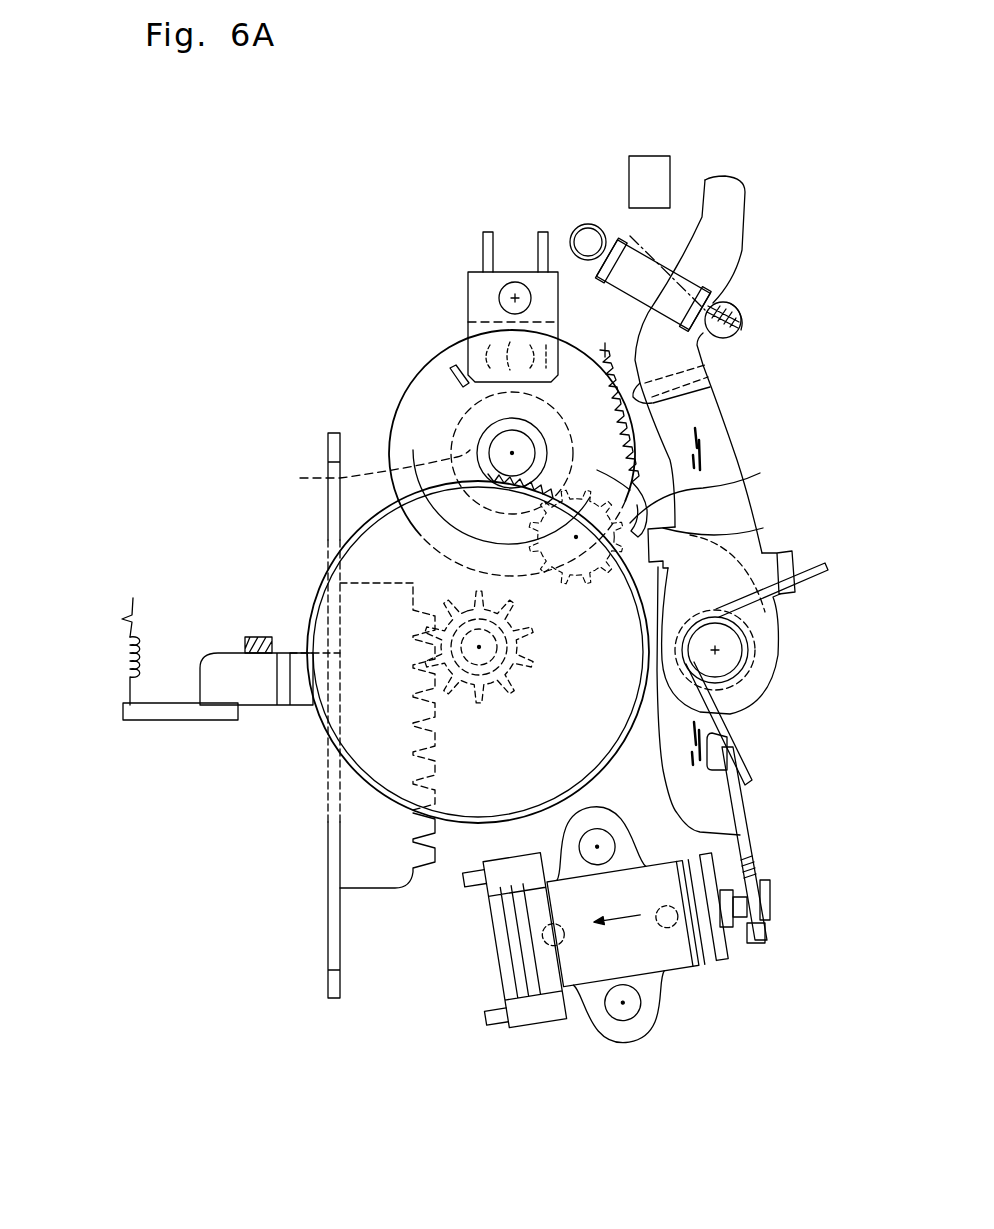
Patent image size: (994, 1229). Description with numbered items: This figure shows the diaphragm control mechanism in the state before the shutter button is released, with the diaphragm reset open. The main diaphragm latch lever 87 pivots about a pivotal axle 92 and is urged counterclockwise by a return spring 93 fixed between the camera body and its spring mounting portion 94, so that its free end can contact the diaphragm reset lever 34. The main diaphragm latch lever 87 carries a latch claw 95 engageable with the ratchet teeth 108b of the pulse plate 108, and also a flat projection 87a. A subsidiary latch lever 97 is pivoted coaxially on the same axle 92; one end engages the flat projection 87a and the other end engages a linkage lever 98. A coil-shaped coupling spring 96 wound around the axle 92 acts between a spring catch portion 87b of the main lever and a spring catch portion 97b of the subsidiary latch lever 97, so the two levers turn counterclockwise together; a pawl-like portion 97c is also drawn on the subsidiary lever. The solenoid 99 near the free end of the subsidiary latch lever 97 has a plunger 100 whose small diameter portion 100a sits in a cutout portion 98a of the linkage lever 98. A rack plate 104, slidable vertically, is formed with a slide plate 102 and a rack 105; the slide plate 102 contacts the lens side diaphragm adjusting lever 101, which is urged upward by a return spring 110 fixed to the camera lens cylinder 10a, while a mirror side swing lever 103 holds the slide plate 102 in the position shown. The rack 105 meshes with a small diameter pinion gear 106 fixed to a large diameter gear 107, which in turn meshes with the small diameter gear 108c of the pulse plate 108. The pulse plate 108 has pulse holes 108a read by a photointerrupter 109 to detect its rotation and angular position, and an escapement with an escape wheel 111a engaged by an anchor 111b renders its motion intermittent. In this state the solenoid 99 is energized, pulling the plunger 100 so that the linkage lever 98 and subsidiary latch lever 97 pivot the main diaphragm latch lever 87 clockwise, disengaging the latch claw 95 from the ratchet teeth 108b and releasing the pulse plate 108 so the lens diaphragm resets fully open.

The camera lens cylinder 10a is at (133, 598).
The diaphragm reset lever 34 is at (648, 162).
The main diaphragm latch lever 87 is at (735, 230).
The flat projection 87a is at (760, 527).
The spring catch portion 87b is at (790, 562).
The pivotal axle 92 is at (740, 655).
The return spring 93 is at (636, 250).
The spring mounting portion 94 is at (742, 328).
The latch claw 95 is at (710, 388).
The coil-shaped coupling spring 96 is at (817, 573).
The subsidiary latch lever 97 is at (673, 775).
The spring catch portion 97b is at (730, 753).
The pawl 97c is at (630, 583).
The linkage lever 98 is at (750, 842).
The cutout portion 98a is at (768, 930).
The solenoid 99 is at (713, 957).
The plunger 100 is at (772, 890).
The small diameter portion 100a is at (745, 925).
The lens side diaphragm adjusting lever 101 is at (175, 718).
The slide plate 102 is at (222, 665).
The mirror side swing lever 103 is at (258, 637).
The rack plate 104 is at (330, 808).
The rack 105 is at (427, 857).
The small diameter pinion gear 106 is at (489, 708).
The large diameter gear 107 is at (372, 742).
The pulse plate 108 is at (460, 347).
The pulse holes 108a is at (448, 370).
The ratchet teeth 108b is at (605, 350).
The small diameter gear 108c is at (480, 447).
The photointerrupter 109 is at (480, 300).
The return spring 110 is at (122, 663).
The escape wheel 111a is at (300, 478).
The anchor 111b is at (733, 477).